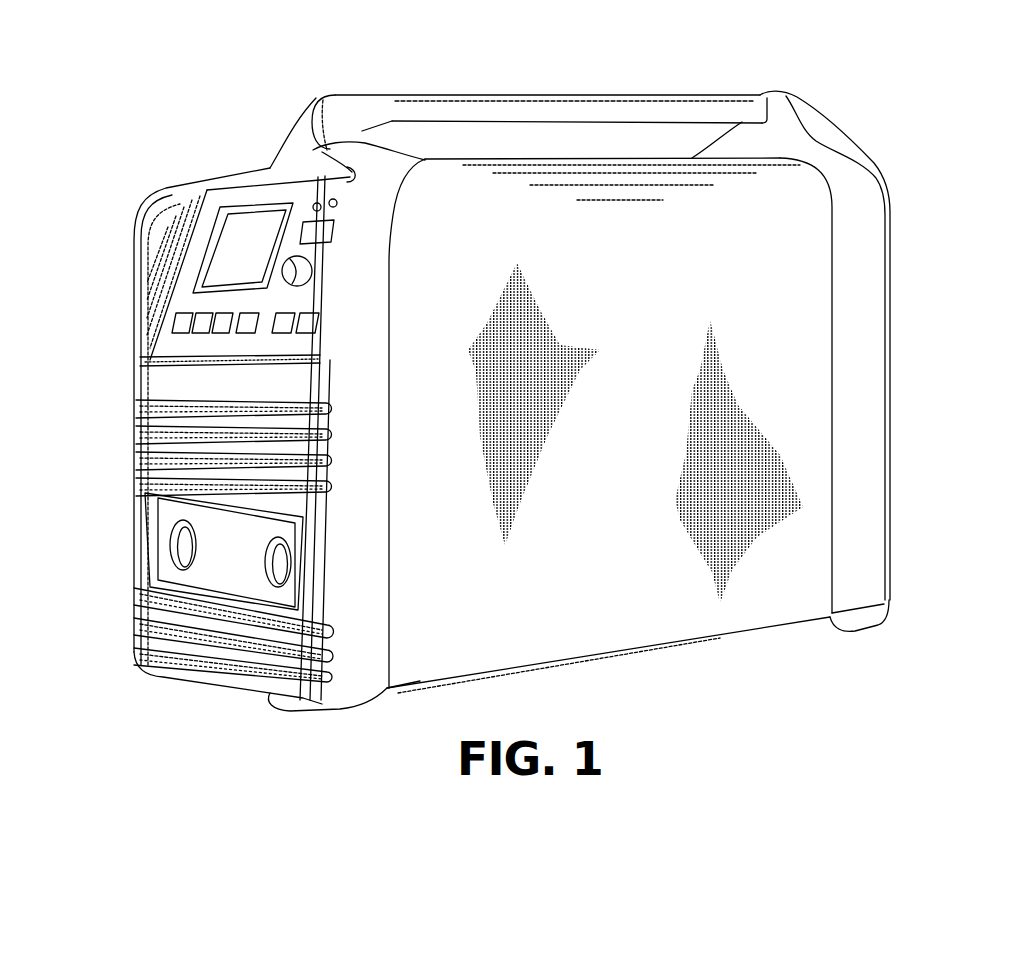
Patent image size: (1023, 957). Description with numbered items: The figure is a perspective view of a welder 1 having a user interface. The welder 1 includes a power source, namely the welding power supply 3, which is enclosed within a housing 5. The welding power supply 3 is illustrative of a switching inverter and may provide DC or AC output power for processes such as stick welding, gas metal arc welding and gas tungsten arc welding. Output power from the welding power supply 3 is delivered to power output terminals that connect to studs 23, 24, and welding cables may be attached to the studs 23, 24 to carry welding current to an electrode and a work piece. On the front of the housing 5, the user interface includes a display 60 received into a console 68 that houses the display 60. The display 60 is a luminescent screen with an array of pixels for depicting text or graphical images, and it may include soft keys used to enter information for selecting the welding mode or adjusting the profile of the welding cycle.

The welder 1 is at (948, 111).
The welding power supply 3 is at (641, 487).
The housing 5 is at (818, 278).
The stud 23 is at (180, 552).
The stud 24 is at (277, 578).
The display 60 is at (243, 248).
The console 68 is at (156, 273).